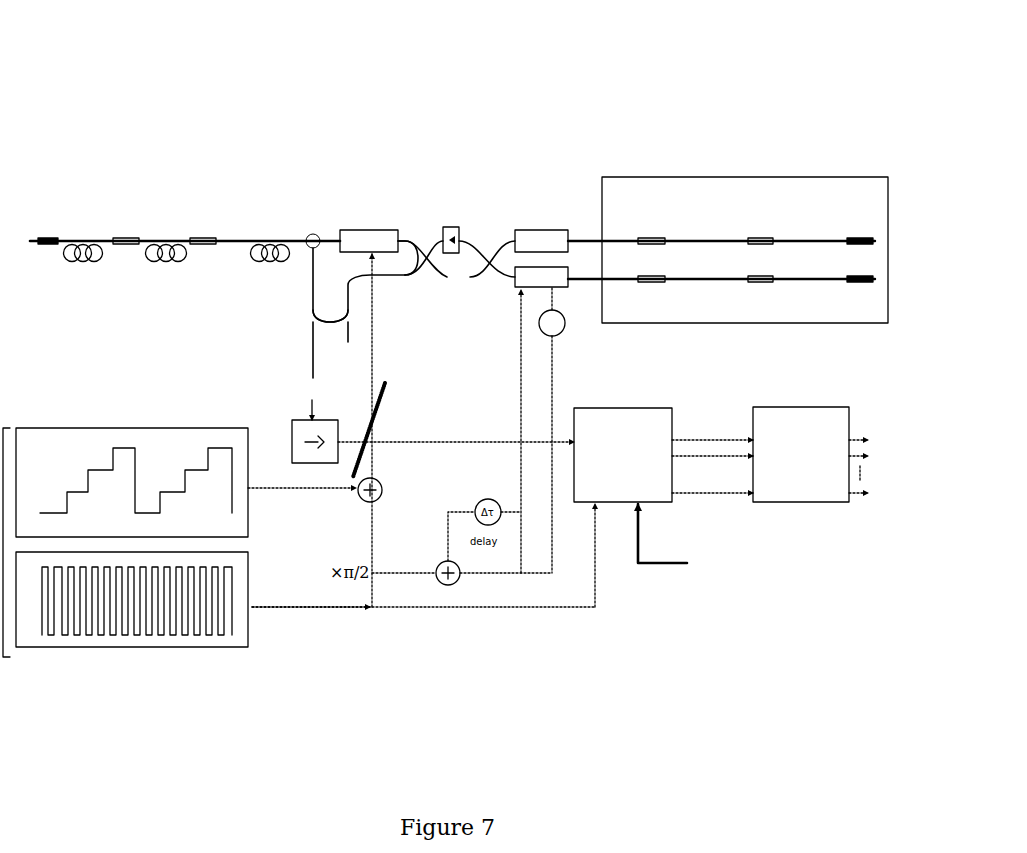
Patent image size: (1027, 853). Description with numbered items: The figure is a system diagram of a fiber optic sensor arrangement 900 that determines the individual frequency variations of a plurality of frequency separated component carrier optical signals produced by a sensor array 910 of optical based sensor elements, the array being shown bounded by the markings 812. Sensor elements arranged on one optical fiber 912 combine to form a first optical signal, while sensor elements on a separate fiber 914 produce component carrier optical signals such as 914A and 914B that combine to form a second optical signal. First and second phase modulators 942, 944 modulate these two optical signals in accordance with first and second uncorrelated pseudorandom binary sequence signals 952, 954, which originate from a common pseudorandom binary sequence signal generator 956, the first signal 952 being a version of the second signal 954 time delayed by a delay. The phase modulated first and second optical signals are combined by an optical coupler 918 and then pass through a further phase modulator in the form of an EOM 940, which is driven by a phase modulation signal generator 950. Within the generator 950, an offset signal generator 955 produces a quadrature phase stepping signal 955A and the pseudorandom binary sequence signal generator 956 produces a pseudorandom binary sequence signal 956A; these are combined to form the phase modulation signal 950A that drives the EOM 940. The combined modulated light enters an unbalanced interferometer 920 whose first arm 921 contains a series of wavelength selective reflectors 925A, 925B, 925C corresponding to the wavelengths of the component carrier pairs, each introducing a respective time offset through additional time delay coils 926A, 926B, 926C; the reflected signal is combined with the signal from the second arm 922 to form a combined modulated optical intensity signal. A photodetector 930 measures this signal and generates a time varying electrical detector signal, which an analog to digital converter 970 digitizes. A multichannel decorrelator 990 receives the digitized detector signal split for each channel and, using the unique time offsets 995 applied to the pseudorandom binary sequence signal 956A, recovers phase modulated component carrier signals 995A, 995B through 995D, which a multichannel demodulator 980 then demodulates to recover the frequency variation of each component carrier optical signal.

The fiber optic sensor arrangement 900 is at (68, 85).
The sensor array 910 is at (735, 177).
The array boundary 812 is at (733, 159).
The optical fiber 912 is at (578, 237).
The separate fiber 914 is at (585, 283).
The component carrier optical signal 914A is at (665, 284).
The component carrier optical signal 914B is at (775, 284).
The optical coupler 918 is at (437, 230).
The unbalanced interferometer 920 is at (293, 207).
The first arm 921 is at (331, 240).
The second arm 922 is at (390, 278).
The wavelength selective reflector 925A is at (213, 236).
The wavelength selective reflector 925B is at (137, 236).
The wavelength selective reflector 925C is at (55, 236).
The time delay coil 926A is at (258, 262).
The time delay coil 926B is at (160, 262).
The time delay coil 926C is at (72, 262).
The photodetector 930 is at (292, 433).
The EOM 940 is at (368, 230).
The first phase modulator 942 is at (546, 230).
The second phase modulator 944 is at (514, 287).
The phase modulation signal generator 950 is at (5, 428).
The phase modulation signal 950A is at (365, 309).
The first pseudorandom binary sequence signal 952 is at (551, 375).
The second pseudorandom binary sequence signal 954 is at (520, 347).
The offset signal generator 955 is at (250, 512).
The quadrature phase stepping signal 955A is at (280, 489).
The pseudorandom binary sequence signal generator 956 is at (250, 636).
The pseudorandom binary sequence signal 956A is at (270, 607).
The analog to digital converter 970 is at (387, 398).
The multichannel demodulator 980 is at (800, 408).
The multichannel decorrelator 990 is at (628, 408).
The delay parameters 995 is at (775, 564).
The phase modulated component carrier signal 995A is at (724, 438).
The phase modulated component carrier signal 995B is at (688, 455).
The phase modulated component carrier signal 995D is at (690, 494).